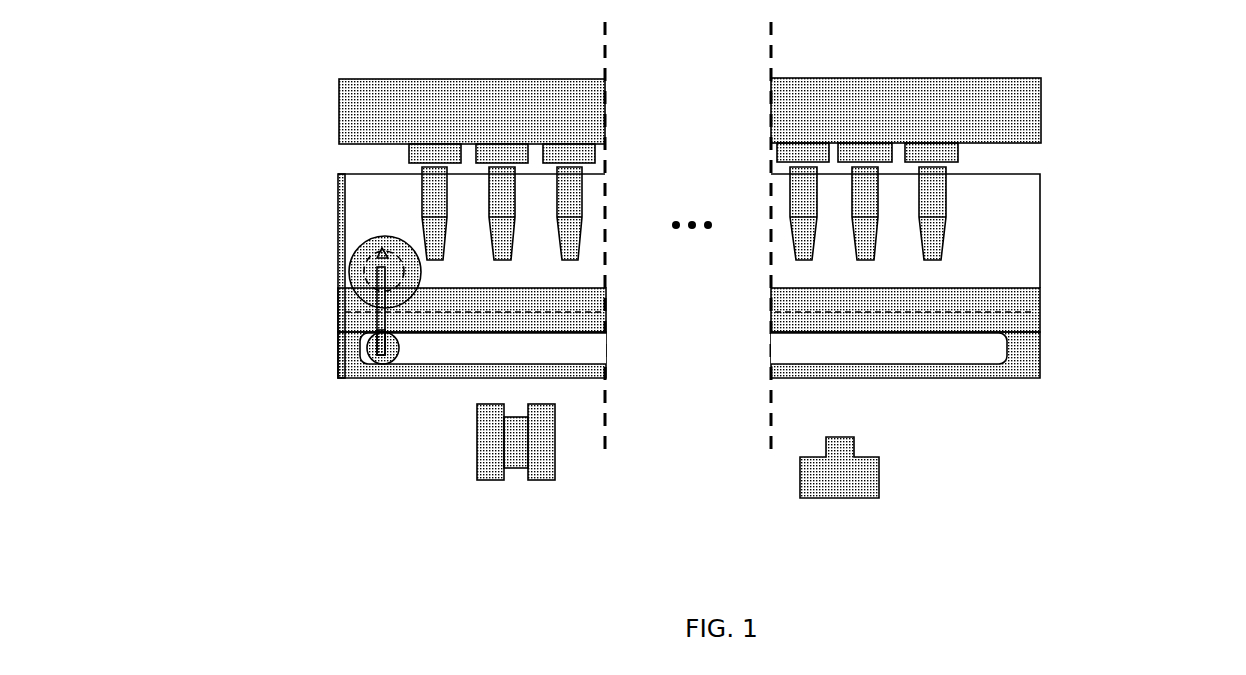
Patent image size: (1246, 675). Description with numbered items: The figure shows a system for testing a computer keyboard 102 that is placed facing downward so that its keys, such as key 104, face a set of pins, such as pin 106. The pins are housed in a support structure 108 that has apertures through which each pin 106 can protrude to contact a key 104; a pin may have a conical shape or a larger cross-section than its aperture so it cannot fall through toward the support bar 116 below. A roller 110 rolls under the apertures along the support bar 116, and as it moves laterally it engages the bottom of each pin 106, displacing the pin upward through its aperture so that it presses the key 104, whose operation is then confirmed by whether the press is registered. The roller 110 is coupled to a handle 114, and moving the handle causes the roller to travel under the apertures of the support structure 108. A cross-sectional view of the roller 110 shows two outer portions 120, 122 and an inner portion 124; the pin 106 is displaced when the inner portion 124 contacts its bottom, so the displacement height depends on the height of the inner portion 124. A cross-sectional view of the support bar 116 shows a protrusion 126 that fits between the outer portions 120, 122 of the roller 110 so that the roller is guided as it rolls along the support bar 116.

The computer keyboard 102 is at (375, 116).
The key 104 is at (430, 157).
The pin 106 is at (433, 195).
The support structure 108 is at (1003, 243).
The roller 110 is at (357, 268).
The handle 114 is at (372, 350).
The support bar 116 is at (1020, 330).
The outer portion 120 is at (483, 470).
The outer portion 122 is at (545, 423).
The inner portion 124 is at (521, 414).
The protrusion 126 is at (838, 443).